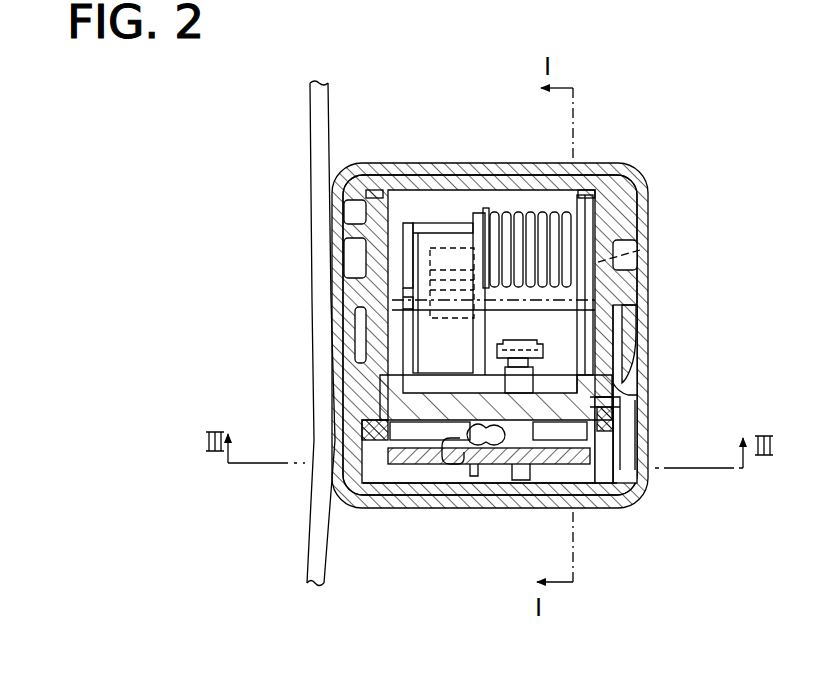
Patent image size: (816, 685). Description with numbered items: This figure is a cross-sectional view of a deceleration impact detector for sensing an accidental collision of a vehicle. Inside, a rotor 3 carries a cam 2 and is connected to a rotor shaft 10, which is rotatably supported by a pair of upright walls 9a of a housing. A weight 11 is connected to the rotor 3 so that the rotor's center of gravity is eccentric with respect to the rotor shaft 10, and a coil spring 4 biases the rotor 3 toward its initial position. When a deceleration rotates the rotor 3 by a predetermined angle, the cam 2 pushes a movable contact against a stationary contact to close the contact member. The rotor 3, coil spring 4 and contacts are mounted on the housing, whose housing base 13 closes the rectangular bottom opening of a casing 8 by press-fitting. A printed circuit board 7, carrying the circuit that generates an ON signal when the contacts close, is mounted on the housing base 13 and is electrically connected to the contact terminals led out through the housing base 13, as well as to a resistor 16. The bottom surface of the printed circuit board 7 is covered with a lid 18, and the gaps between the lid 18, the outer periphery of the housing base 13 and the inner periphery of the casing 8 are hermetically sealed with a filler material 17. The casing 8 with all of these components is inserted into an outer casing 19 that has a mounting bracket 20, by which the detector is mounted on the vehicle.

The cam 2 is at (537, 340).
The rotor 3 is at (430, 222).
The coil spring 4 is at (533, 212).
The printed circuit board 7 is at (398, 460).
The casing 8 is at (600, 352).
The upright walls 9a is at (376, 210).
The rotor shaft 10 is at (640, 248).
The weight 11 is at (452, 246).
The housing base 13 is at (588, 470).
The resistor 16 is at (493, 446).
The filler material 17 is at (620, 414).
The lid 18 is at (423, 492).
The outer casing 19 is at (590, 174).
The mounting bracket 20 is at (310, 118).